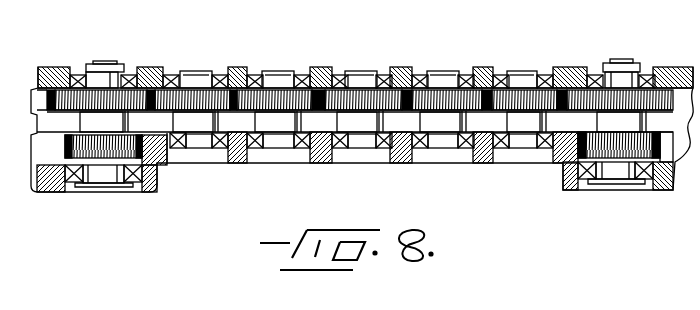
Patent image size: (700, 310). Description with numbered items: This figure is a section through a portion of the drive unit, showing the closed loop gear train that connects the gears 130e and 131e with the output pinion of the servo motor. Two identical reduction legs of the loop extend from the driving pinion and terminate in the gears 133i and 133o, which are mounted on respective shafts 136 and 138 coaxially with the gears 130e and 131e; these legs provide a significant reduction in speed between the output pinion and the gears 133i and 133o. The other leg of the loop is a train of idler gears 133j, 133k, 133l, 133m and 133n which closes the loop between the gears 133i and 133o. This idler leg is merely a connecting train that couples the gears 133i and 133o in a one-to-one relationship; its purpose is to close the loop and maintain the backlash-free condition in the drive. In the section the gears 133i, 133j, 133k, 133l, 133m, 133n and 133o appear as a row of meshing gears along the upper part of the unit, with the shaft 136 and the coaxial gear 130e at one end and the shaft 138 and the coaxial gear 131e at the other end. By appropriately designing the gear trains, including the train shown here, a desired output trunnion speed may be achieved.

The gear 133i is at (65, 97).
The gear 133j is at (192, 97).
The gear 133k is at (275, 97).
The gear 133l is at (355, 97).
The gear 133m is at (443, 97).
The gear 133n is at (518, 97).
The gear 133o is at (618, 97).
The gear 131e is at (145, 162).
The shaft 136 is at (107, 178).
The gear 130e is at (593, 157).
The shaft 138 is at (627, 177).